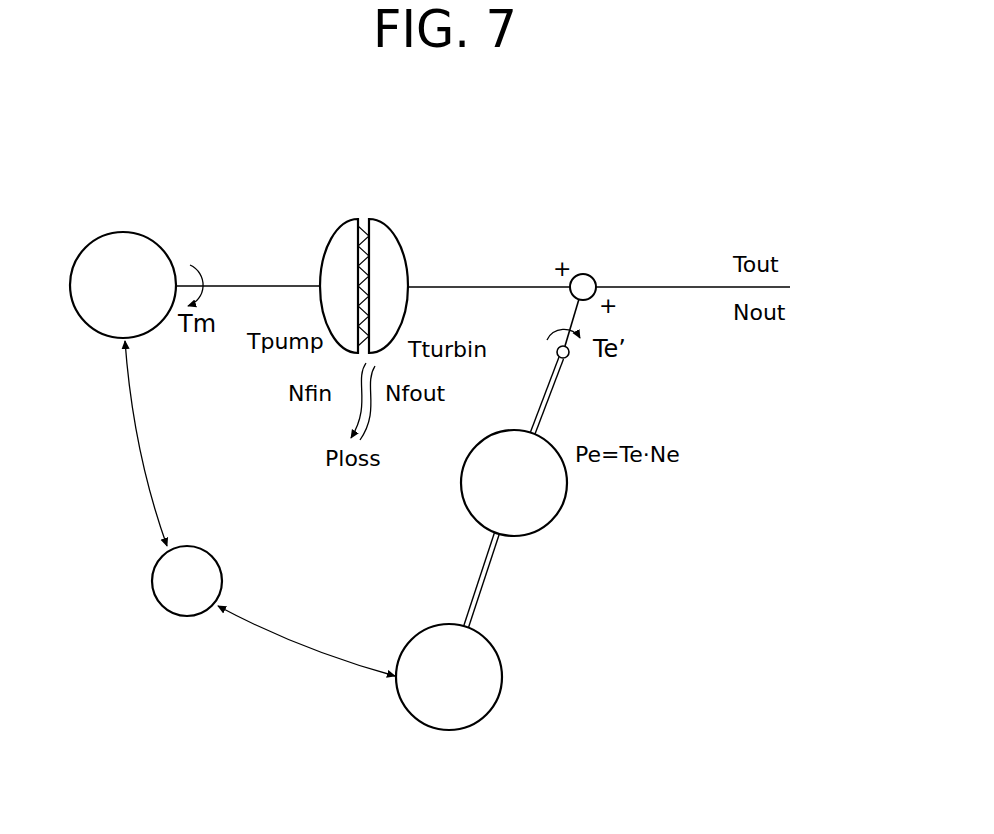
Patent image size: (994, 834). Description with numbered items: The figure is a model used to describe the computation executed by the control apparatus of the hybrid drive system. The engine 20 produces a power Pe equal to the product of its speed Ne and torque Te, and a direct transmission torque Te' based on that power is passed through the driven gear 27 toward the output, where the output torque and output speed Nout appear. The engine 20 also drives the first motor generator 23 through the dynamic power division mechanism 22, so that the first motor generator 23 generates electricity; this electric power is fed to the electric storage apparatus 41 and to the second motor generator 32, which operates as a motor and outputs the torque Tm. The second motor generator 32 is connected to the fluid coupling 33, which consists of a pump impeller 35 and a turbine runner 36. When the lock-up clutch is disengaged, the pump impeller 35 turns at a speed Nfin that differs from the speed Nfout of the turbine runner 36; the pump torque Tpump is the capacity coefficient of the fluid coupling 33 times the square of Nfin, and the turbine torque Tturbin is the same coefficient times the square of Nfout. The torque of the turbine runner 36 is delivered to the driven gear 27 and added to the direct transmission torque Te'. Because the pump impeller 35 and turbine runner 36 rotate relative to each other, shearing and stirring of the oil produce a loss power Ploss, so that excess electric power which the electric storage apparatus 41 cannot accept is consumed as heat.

The engine 20 is at (568, 496).
The dynamic power division mechanism 22 is at (492, 592).
The first motor generator 23 is at (440, 732).
The driven gear 27 is at (589, 261).
The second motor generator 32 is at (122, 232).
The fluid coupling 33 is at (372, 247).
The pump impeller 35 is at (332, 241).
The turbine runner 36 is at (403, 237).
The electric storage apparatus 41 is at (178, 615).